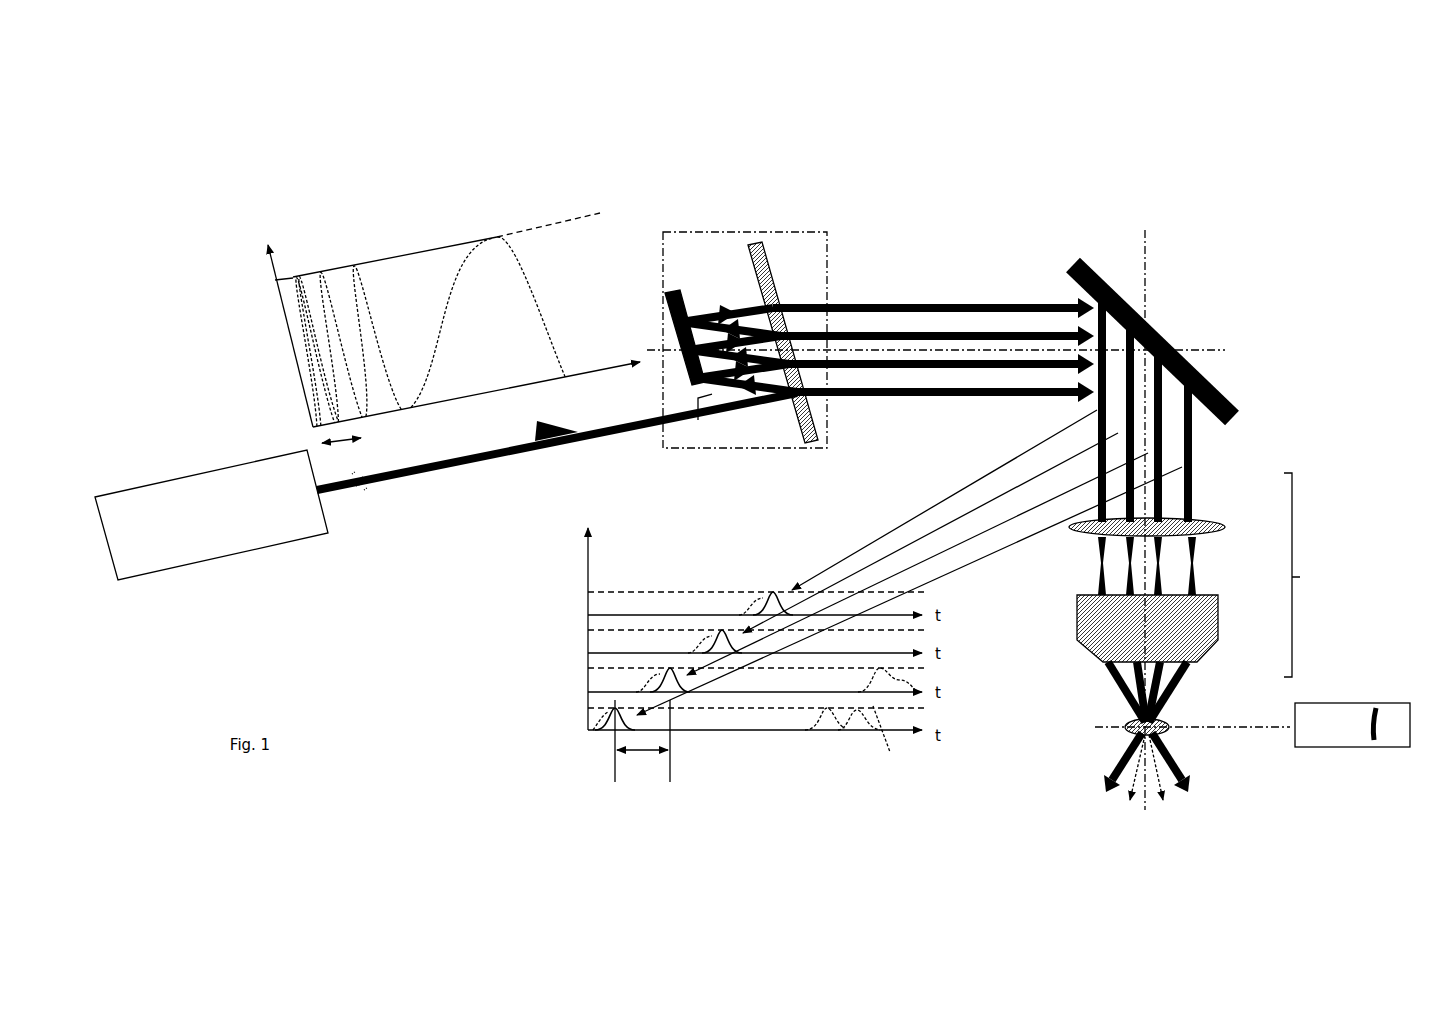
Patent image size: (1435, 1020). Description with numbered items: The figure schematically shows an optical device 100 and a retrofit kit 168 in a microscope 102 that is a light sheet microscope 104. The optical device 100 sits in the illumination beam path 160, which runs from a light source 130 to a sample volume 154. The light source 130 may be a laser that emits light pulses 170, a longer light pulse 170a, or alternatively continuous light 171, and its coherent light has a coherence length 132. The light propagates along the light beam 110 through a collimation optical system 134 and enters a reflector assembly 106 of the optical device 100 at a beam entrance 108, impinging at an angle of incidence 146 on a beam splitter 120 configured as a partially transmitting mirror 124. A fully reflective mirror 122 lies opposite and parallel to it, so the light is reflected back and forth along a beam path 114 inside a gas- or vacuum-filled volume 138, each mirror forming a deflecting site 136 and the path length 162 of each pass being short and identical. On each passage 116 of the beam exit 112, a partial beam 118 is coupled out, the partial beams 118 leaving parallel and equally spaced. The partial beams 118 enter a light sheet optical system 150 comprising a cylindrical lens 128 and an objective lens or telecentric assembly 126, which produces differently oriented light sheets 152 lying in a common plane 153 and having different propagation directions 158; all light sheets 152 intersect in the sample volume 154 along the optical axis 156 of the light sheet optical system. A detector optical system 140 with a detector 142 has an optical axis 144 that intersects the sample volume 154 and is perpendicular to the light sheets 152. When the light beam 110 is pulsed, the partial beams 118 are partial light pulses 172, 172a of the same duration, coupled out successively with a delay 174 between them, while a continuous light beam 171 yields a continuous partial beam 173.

The optical device 100 is at (697, 228).
The microscope 102 is at (103, 273).
The light sheet microscope 104 is at (147, 303).
The reflector assembly 106 is at (672, 380).
The beam entrance 108 is at (782, 402).
The light beam 110 is at (478, 456).
The beam exit 112 is at (812, 320).
The beam path 114 is at (723, 305).
The passage 116 is at (841, 333).
The partial beam 118 is at (928, 307).
The beam splitter 120 is at (783, 319).
The fully reflective mirror 122 is at (668, 292).
The partially transmitting mirror 124 is at (766, 250).
The objective lens 126 is at (1220, 622).
The cylindrical lens 128 is at (1193, 528).
The light source 130 is at (252, 527).
The coherence length 132 is at (341, 453).
The collimation optical system 134 is at (368, 490).
The deflecting site 136 is at (763, 322).
The volume 138 is at (700, 315).
The detector optical system 140 is at (1308, 747).
The detector 142 is at (1380, 708).
The optical axis of the detector optical system 144 is at (1222, 729).
The angle of incidence 146 is at (705, 418).
The light sheet optical system 150 is at (1314, 575).
The light sheet 152 is at (1112, 678).
The common plane of the light sheets 153 is at (1048, 726).
The sample volume 154 is at (1142, 731).
The optical axis of the light sheet optical system 156 is at (1166, 790).
The propagation direction of the light sheets 158 is at (1135, 783).
The illumination beam path 160 is at (612, 440).
The path length of a pass 162 is at (668, 328).
The retrofit kit 168 is at (722, 218).
The light pulse 170 is at (300, 281).
The light pulse 170a is at (502, 240).
The continuous light beam 171 is at (548, 221).
The partial light pulse 172 is at (768, 591).
The partial light pulse 172a is at (853, 732).
The continuous partial beam 173 is at (887, 741).
The delay 174 is at (642, 745).